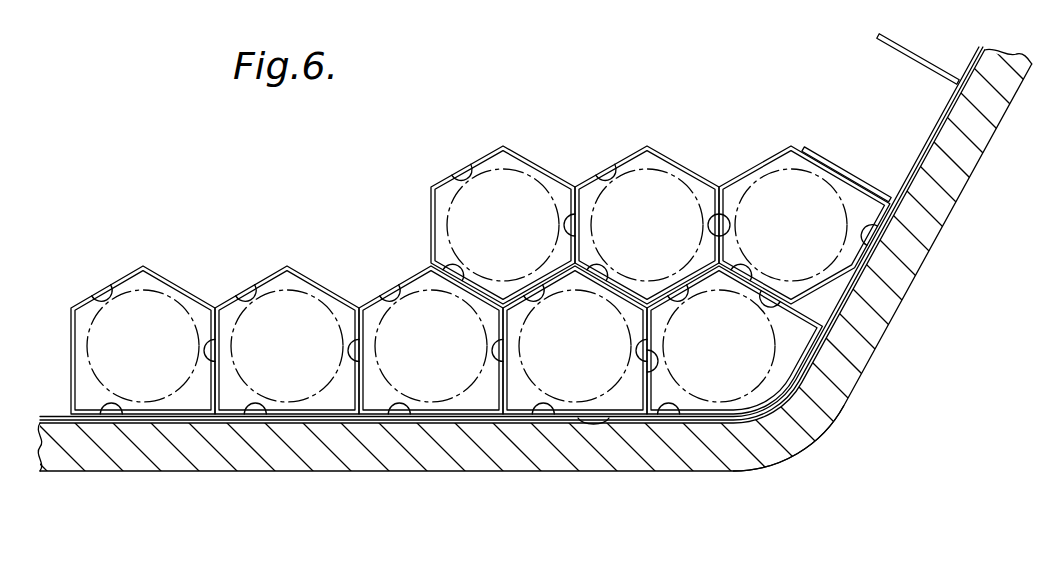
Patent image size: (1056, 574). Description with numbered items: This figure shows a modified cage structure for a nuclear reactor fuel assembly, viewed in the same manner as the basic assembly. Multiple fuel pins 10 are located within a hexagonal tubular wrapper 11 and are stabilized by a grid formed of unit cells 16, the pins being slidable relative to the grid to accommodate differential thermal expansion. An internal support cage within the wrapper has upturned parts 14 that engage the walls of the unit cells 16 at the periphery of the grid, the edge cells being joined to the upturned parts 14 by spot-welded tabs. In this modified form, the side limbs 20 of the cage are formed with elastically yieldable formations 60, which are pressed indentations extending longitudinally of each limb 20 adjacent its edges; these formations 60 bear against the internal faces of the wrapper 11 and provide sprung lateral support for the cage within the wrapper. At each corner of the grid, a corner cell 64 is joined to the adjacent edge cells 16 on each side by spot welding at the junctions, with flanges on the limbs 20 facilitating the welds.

The fuel pin 10 is at (703, 400).
The hexagonal tubular wrapper 11 is at (296, 455).
The upturned part 14 is at (384, 424).
The unit cell 16 is at (565, 186).
The limb 20 is at (441, 418).
The elastically yieldable formation 60 is at (591, 430).
The corner cell 64 is at (845, 388).